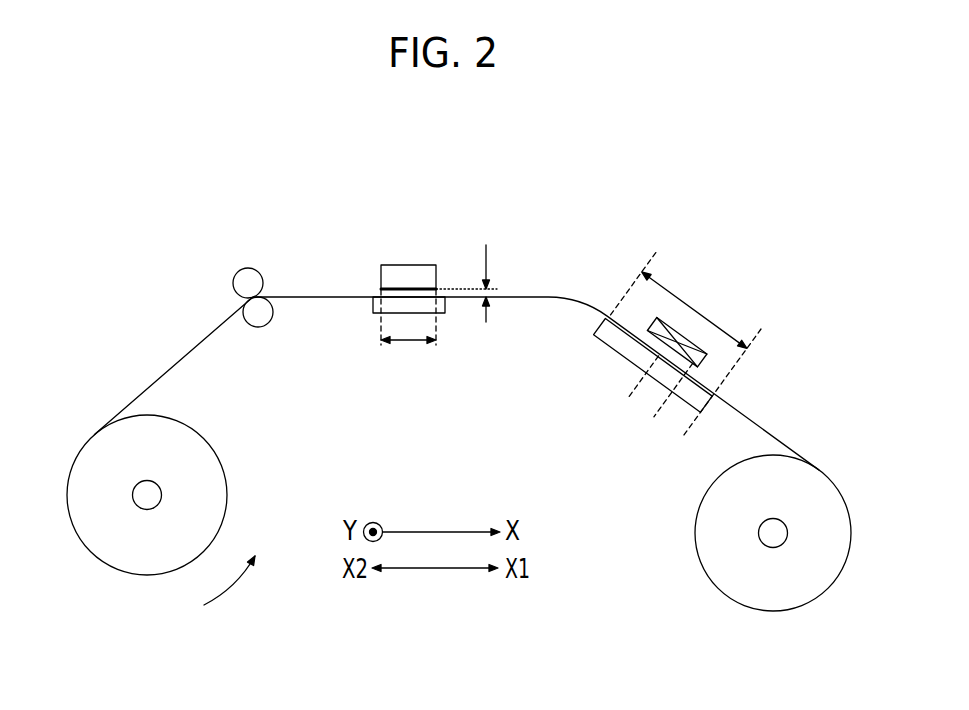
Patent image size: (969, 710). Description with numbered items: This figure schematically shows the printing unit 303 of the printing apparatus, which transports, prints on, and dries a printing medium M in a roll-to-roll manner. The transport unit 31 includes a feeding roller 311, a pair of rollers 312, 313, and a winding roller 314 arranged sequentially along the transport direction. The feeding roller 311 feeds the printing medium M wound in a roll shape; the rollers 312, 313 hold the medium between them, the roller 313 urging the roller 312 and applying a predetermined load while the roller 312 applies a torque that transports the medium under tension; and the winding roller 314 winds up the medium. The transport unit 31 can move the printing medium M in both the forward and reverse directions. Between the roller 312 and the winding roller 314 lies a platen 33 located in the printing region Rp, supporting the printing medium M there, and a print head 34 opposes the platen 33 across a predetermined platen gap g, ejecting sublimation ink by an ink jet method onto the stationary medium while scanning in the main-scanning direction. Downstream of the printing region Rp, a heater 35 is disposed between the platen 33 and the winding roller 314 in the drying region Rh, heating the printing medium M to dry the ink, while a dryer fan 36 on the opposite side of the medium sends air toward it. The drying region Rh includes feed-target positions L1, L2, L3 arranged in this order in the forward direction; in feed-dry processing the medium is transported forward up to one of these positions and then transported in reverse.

The printing unit 303 is at (90, 201).
The transport unit 31 is at (214, 670).
The feeding roller 311 is at (143, 493).
The roller 312 is at (260, 316).
The roller 313 is at (247, 278).
The winding roller 314 is at (768, 536).
The platen 33 is at (373, 304).
The print head 34 is at (407, 268).
The heater 35 is at (620, 338).
The dryer fan 36 is at (656, 318).
The printing medium M is at (177, 362).
The platen gap g is at (473, 283).
The printing region Rp is at (408, 327).
The drying region Rh is at (678, 301).
The feed-target position L1 is at (635, 390).
The feed-target position L2 is at (666, 403).
The feed-target position L3 is at (714, 396).